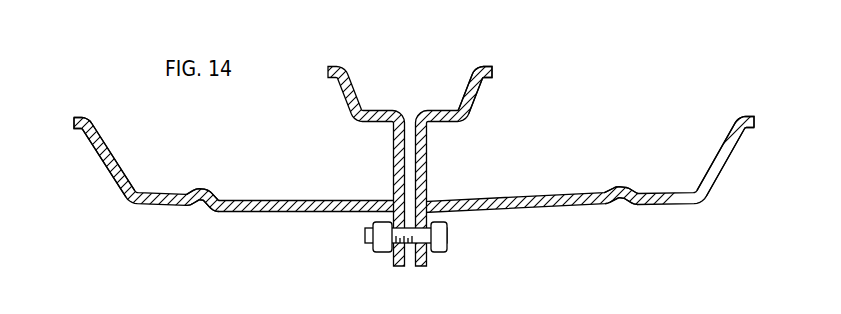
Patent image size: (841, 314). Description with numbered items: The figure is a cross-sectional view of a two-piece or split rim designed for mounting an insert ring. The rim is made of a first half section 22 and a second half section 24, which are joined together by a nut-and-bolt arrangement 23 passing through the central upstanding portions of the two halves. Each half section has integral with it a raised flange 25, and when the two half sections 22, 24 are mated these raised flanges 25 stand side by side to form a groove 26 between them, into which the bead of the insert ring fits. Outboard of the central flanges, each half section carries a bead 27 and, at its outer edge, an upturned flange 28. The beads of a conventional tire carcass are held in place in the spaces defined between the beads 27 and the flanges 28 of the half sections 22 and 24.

The first half section 22 is at (312, 212).
The nut-and-bolt arrangement 23 is at (448, 249).
The second half section 24 is at (512, 207).
The raised flanges 25 is at (393, 168).
The groove 26 is at (445, 95).
The beads 27 is at (200, 189).
The flanges 28 is at (102, 162).